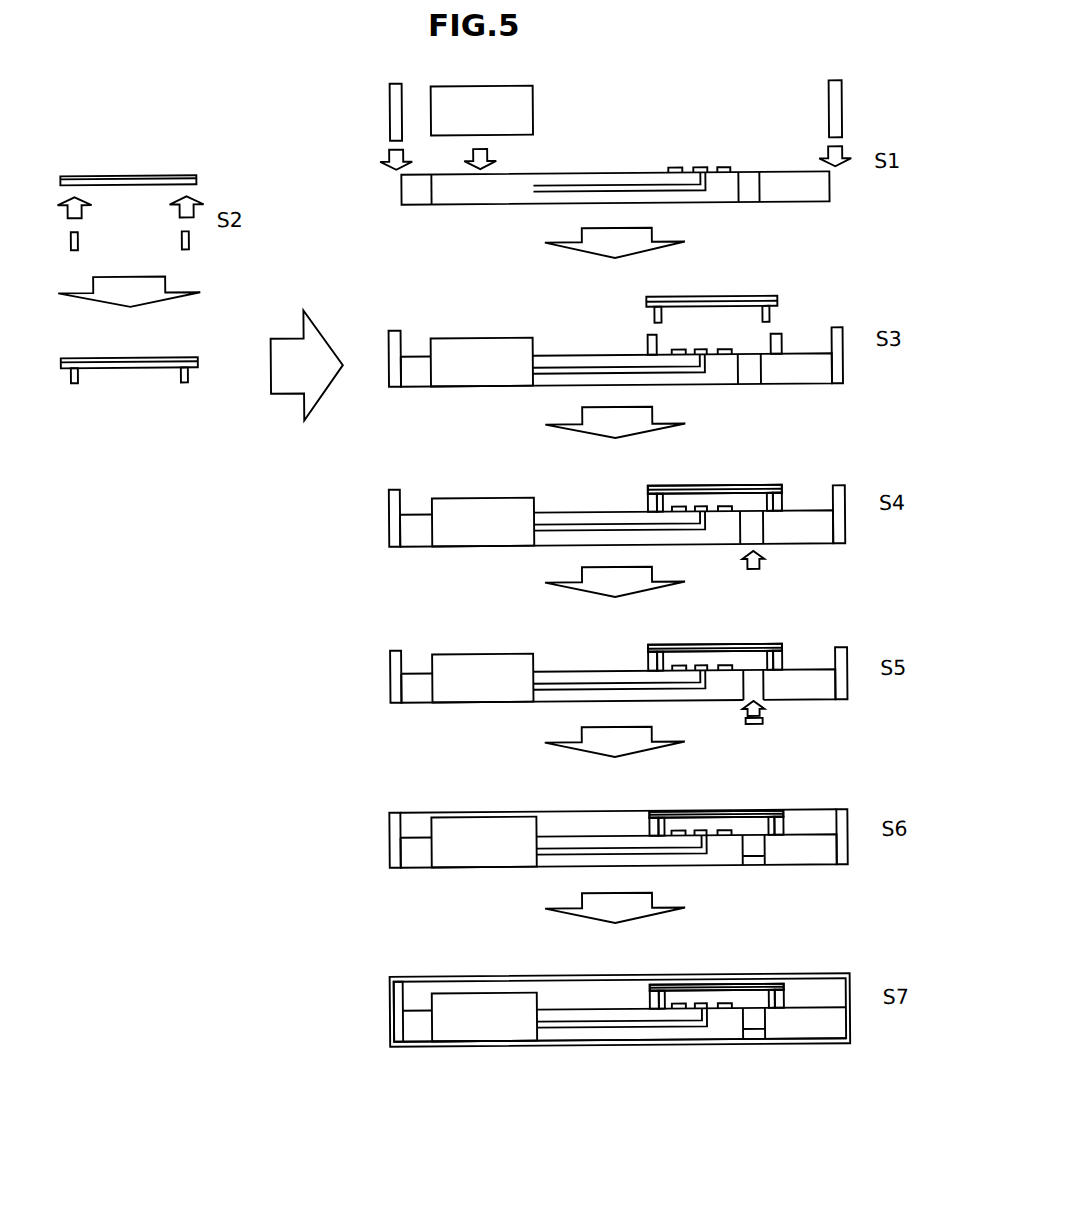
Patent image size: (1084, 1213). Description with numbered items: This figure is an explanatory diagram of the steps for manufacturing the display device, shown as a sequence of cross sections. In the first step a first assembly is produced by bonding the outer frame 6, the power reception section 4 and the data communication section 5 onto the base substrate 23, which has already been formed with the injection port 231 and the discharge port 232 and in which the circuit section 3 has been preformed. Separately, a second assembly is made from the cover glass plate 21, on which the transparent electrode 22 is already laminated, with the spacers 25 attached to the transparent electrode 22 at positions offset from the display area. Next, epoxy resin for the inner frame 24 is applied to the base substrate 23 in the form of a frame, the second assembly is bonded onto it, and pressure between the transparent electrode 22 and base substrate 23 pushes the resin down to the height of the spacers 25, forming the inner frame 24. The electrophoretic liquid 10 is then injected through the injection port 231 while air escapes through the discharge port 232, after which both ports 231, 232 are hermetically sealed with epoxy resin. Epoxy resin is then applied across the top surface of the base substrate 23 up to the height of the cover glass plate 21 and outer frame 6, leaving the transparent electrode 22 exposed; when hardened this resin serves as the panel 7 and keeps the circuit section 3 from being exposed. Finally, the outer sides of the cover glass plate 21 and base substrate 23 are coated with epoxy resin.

The circuit section 3 is at (637, 181).
The power reception section 4 is at (516, 559).
The data communication section 5 is at (534, 100).
The outer frame 6 is at (390, 104).
The panel 7 is at (822, 815).
The electrophoretic liquid 10 is at (755, 498).
The cover glass plate 21 is at (188, 176).
The transparent electrode 22 is at (199, 181).
The base substrate 23 is at (830, 186).
The inner frame 24 is at (648, 342).
The spacers 25 is at (189, 241).
The electrophoresis injection port 231 is at (805, 629).
The air discharge port 232 is at (748, 186).